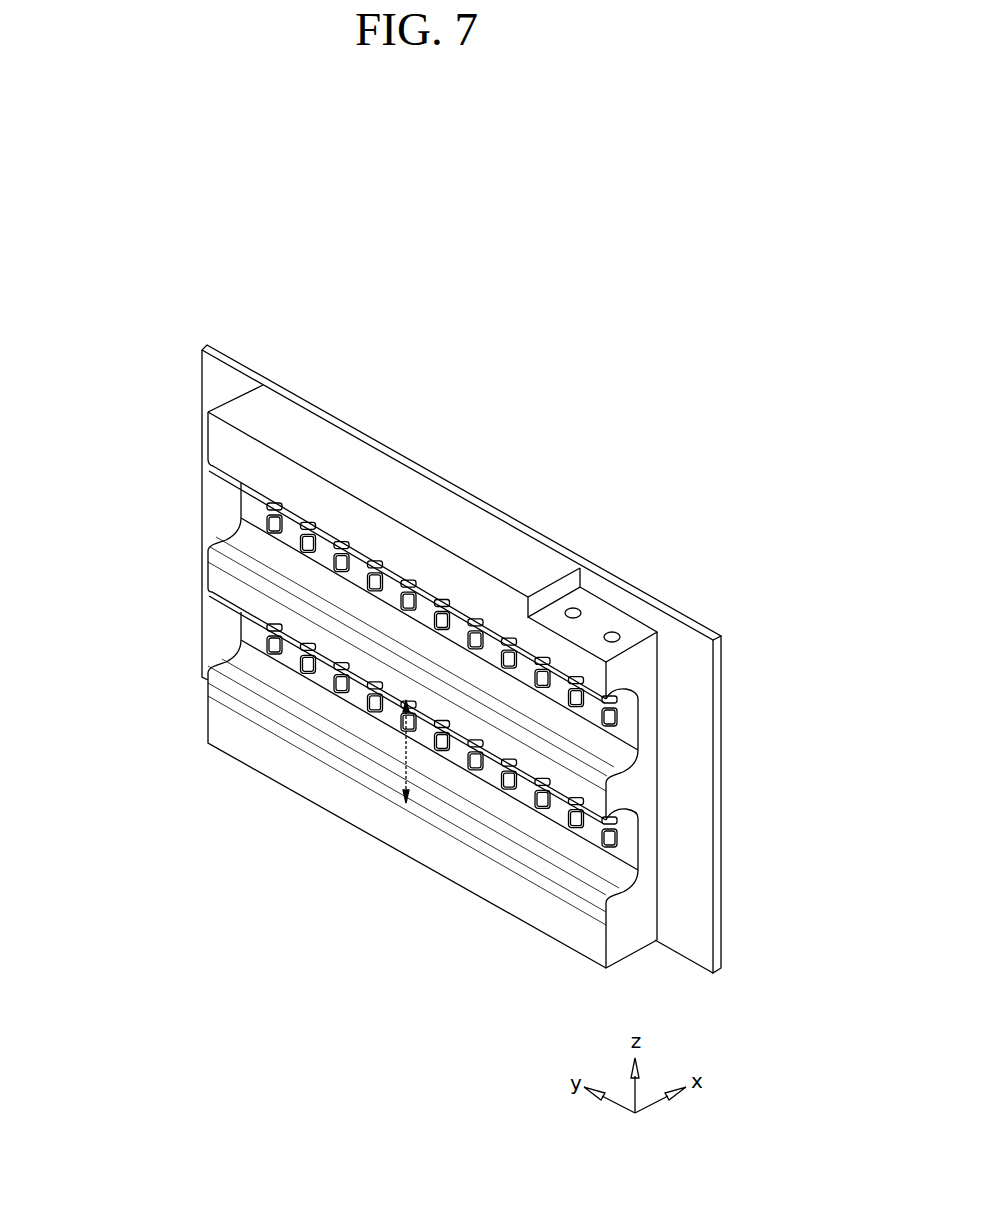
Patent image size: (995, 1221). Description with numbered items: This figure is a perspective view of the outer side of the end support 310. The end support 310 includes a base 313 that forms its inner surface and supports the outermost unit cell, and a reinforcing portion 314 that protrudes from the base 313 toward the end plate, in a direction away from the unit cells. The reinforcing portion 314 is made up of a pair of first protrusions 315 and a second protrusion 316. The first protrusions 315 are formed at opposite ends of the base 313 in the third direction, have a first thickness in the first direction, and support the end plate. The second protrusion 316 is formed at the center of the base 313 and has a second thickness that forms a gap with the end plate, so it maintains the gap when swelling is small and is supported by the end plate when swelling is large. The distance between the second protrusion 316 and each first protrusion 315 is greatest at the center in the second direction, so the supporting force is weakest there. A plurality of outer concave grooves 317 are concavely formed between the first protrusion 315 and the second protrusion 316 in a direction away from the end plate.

The end support 310 is at (454, 468).
The base 313 is at (690, 829).
The reinforcing portion 314 is at (96, 495).
The first protrusions 315 is at (245, 468).
The second protrusion 316 is at (222, 586).
The outer concave grooves 317 is at (468, 762).